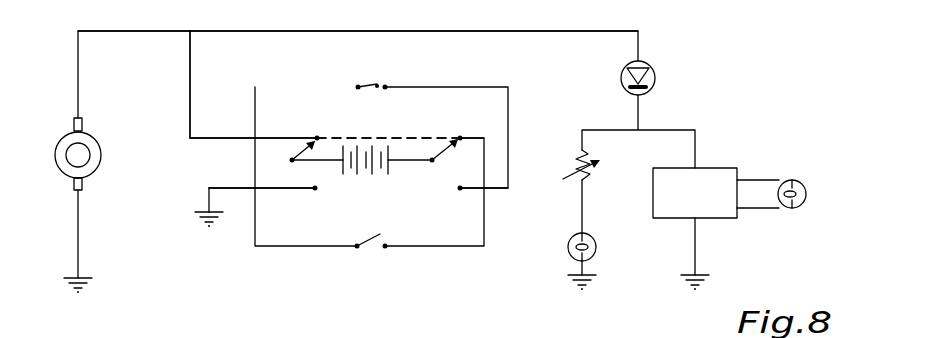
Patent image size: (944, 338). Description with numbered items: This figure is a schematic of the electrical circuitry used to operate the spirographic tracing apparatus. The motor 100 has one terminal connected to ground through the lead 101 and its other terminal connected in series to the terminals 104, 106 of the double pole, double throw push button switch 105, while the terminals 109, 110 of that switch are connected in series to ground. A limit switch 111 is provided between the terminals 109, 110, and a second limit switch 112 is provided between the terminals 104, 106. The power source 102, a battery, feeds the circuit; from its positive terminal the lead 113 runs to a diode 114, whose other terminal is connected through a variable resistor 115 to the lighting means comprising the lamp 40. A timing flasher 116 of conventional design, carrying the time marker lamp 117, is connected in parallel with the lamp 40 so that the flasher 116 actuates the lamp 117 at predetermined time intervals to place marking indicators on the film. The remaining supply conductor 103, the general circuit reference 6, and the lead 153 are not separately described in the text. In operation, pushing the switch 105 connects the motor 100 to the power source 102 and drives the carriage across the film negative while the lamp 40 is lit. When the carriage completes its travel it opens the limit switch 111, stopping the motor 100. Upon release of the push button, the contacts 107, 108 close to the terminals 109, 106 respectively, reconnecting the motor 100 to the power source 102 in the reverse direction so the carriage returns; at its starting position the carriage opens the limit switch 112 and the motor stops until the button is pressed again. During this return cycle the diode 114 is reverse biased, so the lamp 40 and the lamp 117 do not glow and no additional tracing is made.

The motor 100 is at (56, 148).
The lead 101 is at (81, 225).
The supply conductor 103 is at (141, 34).
The terminal 104 is at (317, 138).
The contact 107 is at (305, 151).
The power source 102 is at (376, 178).
The contact 108 is at (444, 157).
The terminal 110 is at (461, 136).
The double pole, double throw push button switch 105 is at (438, 116).
The terminal 106 is at (459, 190).
The terminal 109 is at (312, 190).
The limit switch 111 is at (363, 251).
The limit switch 112 is at (363, 85).
The lead 113 is at (473, 24).
The circuit 6 is at (656, 5).
The diode 114 is at (656, 70).
The variable resistor 115 is at (588, 177).
The lamp 40 is at (596, 250).
The timing flasher 116 is at (705, 175).
The time marker lamp 117 is at (806, 185).
The lead 153 is at (375, 337).